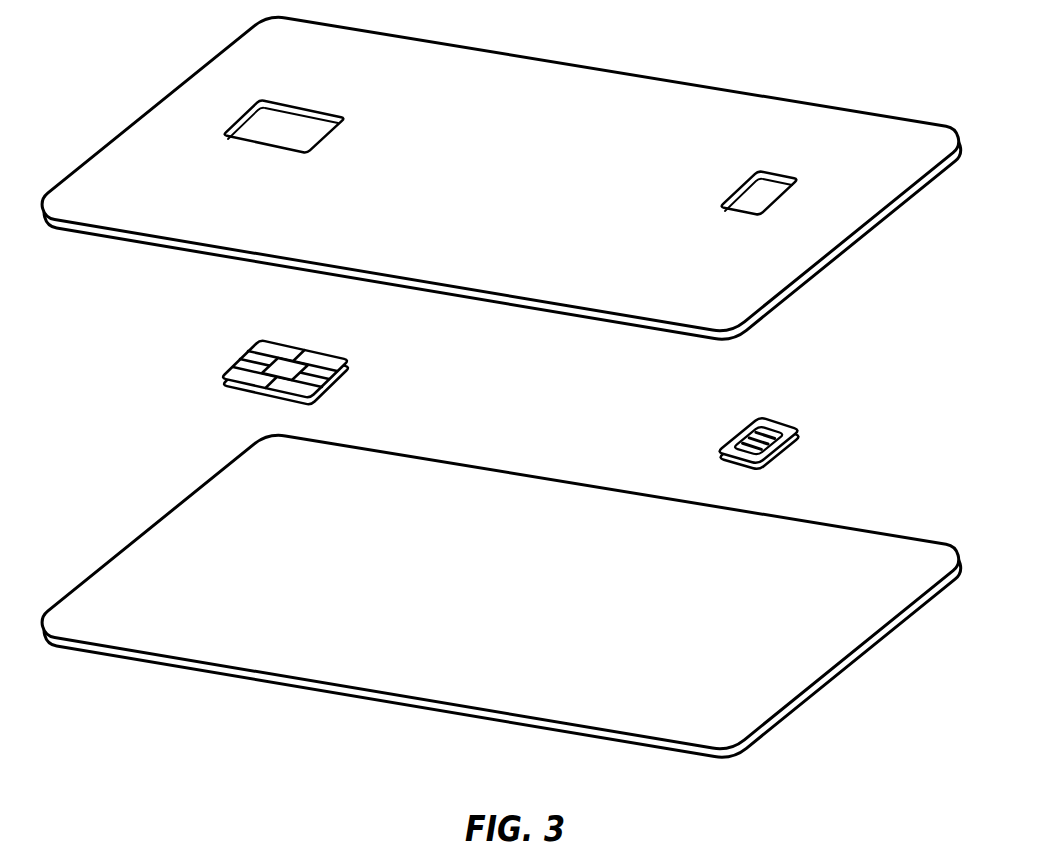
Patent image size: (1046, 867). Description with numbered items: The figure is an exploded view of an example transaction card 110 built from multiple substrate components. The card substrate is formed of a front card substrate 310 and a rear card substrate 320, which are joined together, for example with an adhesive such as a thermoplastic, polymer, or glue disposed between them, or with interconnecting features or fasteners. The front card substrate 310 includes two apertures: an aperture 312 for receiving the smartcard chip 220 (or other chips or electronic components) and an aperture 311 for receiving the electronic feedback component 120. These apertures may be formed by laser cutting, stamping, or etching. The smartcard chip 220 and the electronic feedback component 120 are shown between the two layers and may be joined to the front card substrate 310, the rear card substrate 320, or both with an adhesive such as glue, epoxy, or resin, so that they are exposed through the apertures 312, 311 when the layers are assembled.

The transaction card 110 is at (126, 110).
The front card substrate 310 is at (845, 109).
The aperture 311 is at (799, 178).
The aperture 312 is at (341, 116).
The smartcard chip 220 is at (349, 358).
The electronic feedback component 120 is at (799, 422).
The rear card substrate 320 is at (851, 530).